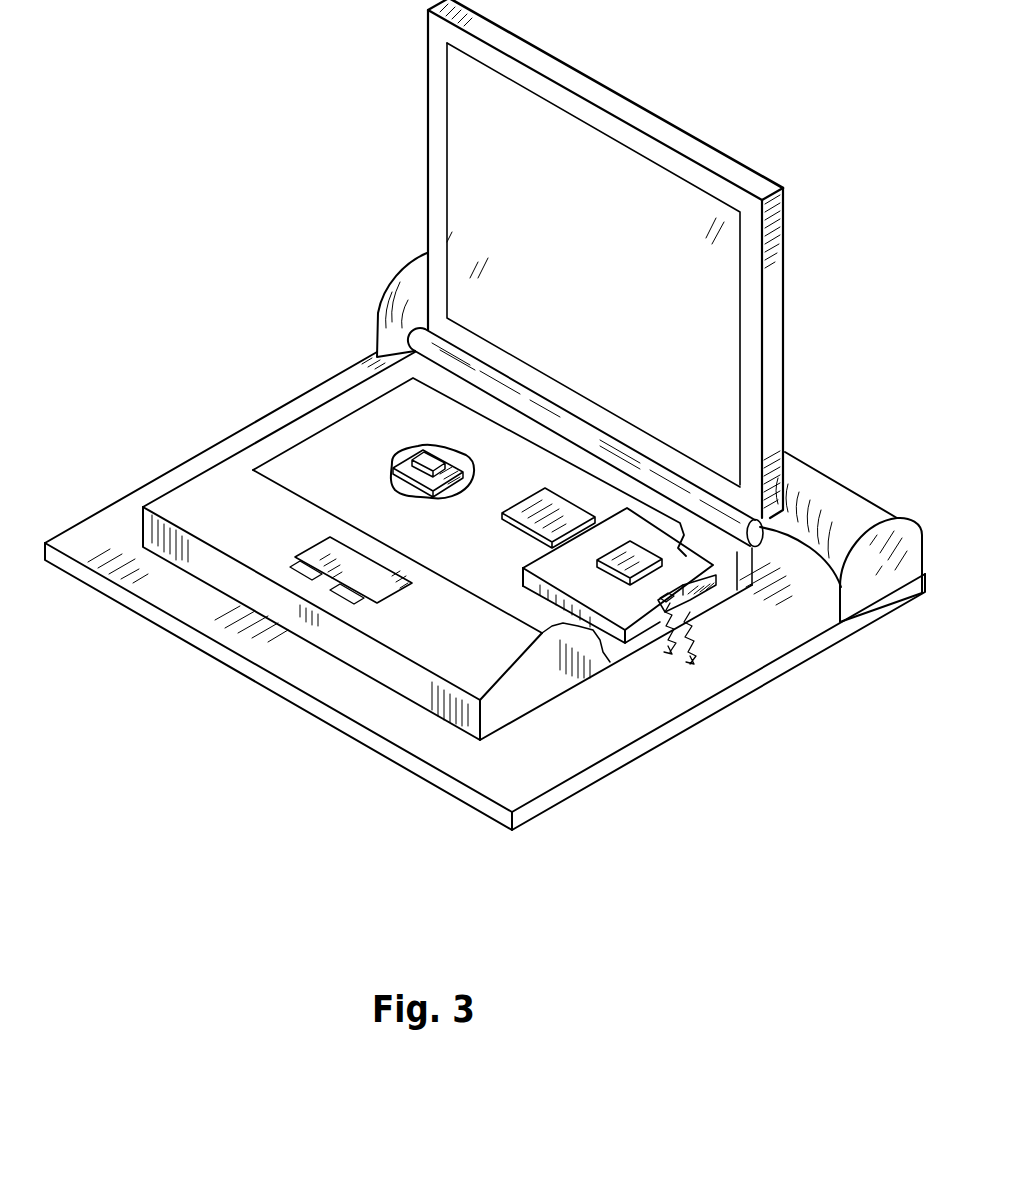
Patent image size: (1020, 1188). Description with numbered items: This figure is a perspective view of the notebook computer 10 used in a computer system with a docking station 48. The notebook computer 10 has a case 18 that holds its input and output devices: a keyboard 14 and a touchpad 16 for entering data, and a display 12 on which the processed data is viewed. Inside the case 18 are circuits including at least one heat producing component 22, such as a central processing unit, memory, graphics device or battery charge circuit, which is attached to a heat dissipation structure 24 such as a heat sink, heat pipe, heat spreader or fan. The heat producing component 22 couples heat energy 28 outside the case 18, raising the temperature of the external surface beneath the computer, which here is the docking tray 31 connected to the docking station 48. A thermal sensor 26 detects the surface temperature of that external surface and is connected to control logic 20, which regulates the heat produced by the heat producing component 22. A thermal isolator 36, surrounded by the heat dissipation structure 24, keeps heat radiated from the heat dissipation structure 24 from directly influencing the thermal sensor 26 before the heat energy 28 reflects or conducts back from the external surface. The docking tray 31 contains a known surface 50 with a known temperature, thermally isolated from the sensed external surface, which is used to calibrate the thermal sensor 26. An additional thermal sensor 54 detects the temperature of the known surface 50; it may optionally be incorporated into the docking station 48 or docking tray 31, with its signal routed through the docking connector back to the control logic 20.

The notebook computer 10 is at (803, 130).
The display 12 is at (475, 196).
The keyboard 14 is at (330, 462).
The touchpad 16 is at (323, 548).
The case 18 is at (265, 452).
The control logic 20 is at (500, 518).
The heat producing component 22 is at (597, 562).
The heat dissipation structure 24 is at (700, 558).
The thermal sensor 26 is at (520, 584).
The heat energy 28 is at (690, 642).
The docking tray 31 is at (445, 748).
The thermal isolator 36 is at (690, 583).
The docking station 48 is at (824, 485).
The known surface 50 is at (405, 468).
The additional thermal sensor 54 is at (432, 460).